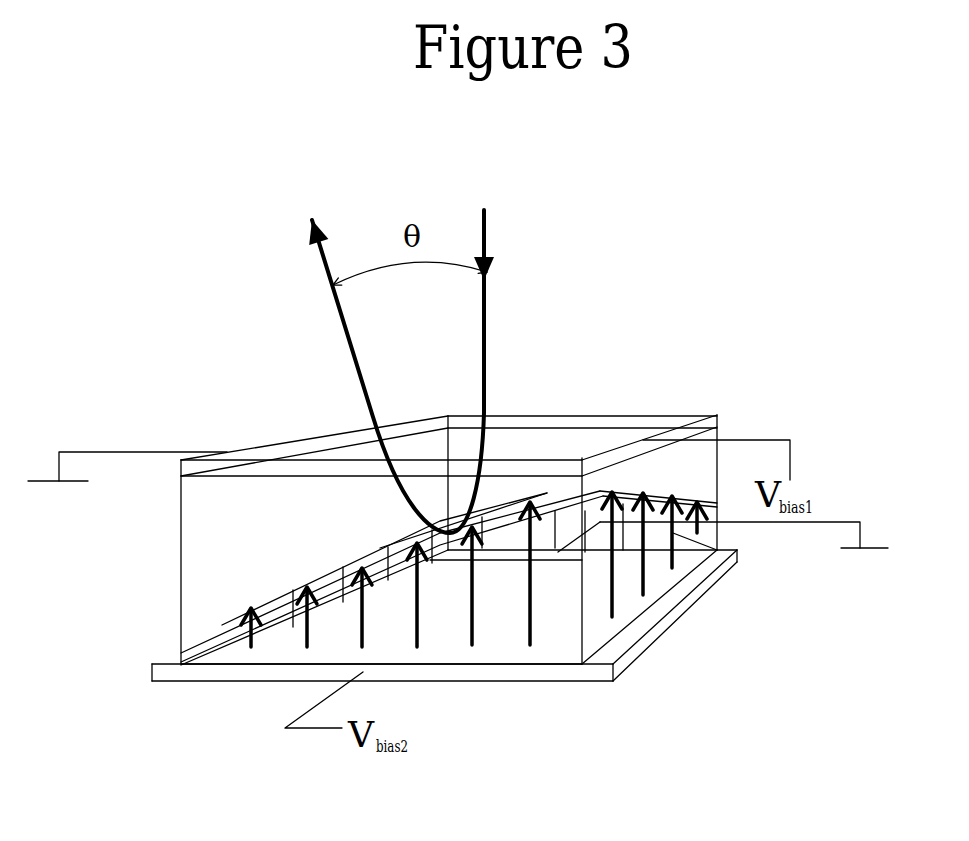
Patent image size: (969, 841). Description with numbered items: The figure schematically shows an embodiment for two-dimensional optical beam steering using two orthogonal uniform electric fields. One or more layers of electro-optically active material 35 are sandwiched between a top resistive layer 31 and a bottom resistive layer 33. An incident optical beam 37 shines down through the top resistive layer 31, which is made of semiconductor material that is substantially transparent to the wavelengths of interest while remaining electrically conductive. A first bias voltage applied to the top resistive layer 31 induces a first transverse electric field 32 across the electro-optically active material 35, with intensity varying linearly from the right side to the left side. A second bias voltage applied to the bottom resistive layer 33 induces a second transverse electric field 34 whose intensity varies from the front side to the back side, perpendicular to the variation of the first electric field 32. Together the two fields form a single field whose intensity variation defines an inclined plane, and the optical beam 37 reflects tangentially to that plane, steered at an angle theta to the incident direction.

The top resistive layer 31 is at (598, 430).
The first transverse electric field 32 is at (473, 620).
The bottom resistive layer 33 is at (650, 637).
The second transverse electric field 34 is at (737, 552).
The electro-optically active material 35 is at (238, 568).
The incident optical beam 37 is at (487, 317).